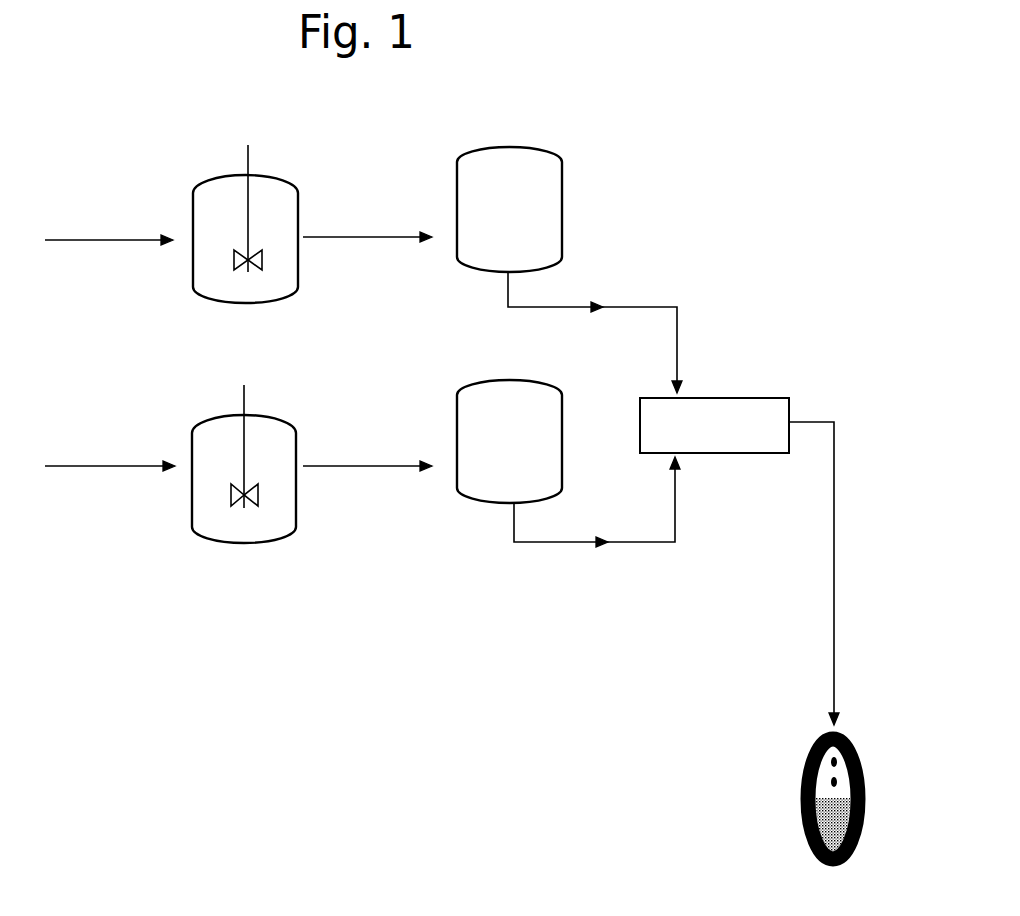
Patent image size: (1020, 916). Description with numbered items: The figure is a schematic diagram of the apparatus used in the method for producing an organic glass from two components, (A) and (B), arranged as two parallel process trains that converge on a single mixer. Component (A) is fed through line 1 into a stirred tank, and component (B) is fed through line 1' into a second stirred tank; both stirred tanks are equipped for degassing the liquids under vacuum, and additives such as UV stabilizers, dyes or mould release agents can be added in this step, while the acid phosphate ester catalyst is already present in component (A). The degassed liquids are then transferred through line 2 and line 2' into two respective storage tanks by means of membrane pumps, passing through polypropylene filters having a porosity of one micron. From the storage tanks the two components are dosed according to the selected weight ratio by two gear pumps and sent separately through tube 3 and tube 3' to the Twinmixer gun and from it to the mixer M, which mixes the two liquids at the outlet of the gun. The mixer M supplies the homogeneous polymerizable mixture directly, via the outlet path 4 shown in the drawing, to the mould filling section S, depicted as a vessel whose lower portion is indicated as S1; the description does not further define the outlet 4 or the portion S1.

The line 1 is at (109, 220).
The line 2 is at (367, 214).
The tube 3 is at (595, 328).
The line 1' is at (110, 485).
The line 2' is at (367, 486).
The tube 3' is at (597, 502).
The mixed stream from mixer M to container S 4 is at (826, 573).
The mixer M is at (734, 411).
The mould filling section S is at (854, 799).
The settled phase in container S S1 is at (833, 857).